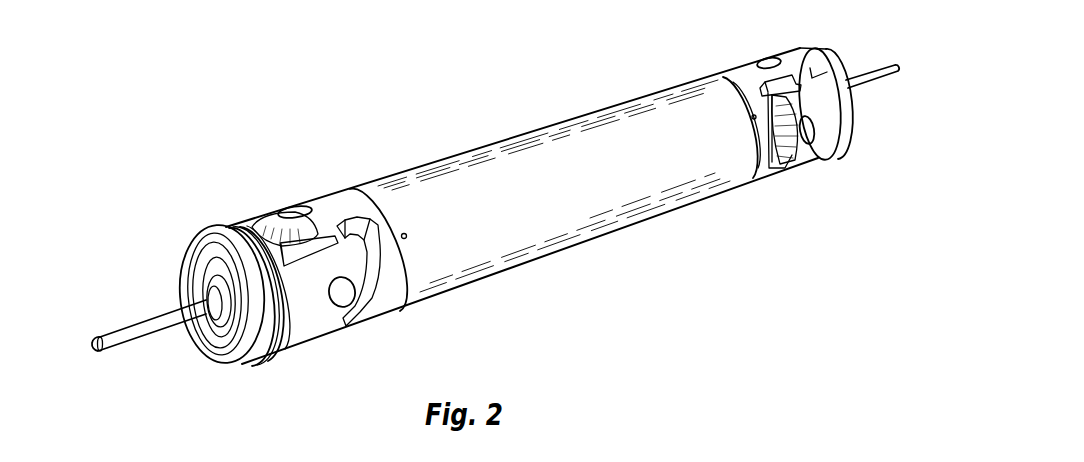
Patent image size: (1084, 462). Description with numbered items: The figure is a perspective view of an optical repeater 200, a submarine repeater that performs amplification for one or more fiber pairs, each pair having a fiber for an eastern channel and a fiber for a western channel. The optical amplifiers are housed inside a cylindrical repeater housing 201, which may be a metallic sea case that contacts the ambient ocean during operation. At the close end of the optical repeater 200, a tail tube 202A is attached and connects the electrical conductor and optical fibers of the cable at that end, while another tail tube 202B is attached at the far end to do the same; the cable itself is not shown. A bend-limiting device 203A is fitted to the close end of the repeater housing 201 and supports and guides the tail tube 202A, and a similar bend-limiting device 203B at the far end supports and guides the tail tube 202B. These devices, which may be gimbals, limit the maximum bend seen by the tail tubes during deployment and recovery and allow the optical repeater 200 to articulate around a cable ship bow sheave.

The optical repeater 200 is at (483, 37).
The repeater housing 201 is at (561, 121).
The tail tube 202A is at (121, 332).
The tail tube 202B is at (886, 80).
The bend-limiting device 203A is at (293, 207).
The bend-limiting device 203B is at (768, 58).